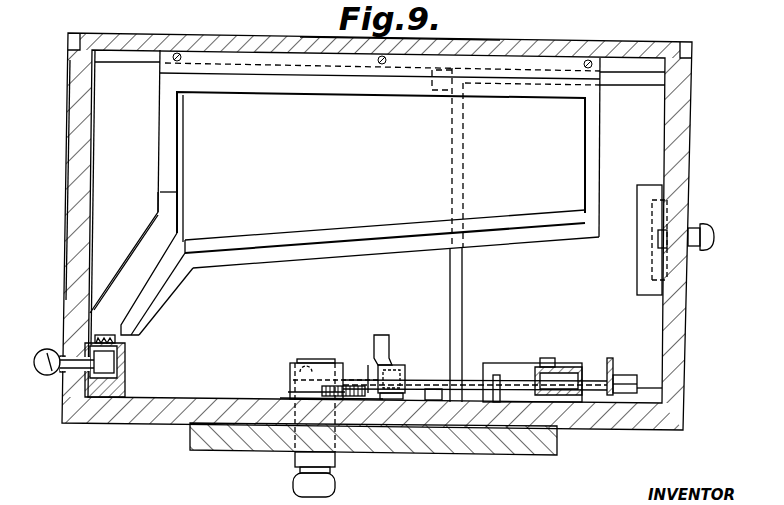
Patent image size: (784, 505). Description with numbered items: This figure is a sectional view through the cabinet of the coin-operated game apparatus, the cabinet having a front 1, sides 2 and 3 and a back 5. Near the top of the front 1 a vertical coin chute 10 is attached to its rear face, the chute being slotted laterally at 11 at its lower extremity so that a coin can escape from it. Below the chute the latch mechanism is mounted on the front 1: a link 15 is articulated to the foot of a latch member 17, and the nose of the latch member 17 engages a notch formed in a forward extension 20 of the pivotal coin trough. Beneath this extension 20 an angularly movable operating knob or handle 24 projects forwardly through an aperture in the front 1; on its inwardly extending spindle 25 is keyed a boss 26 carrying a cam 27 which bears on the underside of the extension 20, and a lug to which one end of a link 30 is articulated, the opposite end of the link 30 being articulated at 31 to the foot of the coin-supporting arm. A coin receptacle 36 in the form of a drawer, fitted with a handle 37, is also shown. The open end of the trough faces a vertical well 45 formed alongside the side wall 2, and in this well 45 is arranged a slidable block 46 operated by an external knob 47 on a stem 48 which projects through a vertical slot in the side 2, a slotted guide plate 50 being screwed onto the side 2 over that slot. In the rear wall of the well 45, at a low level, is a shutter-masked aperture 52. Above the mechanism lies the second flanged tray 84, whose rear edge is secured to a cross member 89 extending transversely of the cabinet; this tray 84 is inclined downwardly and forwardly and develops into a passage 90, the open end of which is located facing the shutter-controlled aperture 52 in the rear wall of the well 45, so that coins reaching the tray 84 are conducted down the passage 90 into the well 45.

The front 1 is at (580, 420).
The side 2 is at (672, 128).
The side 3 is at (64, 175).
The back 5 is at (501, 50).
The coin chute 10 is at (560, 365).
The lateral slot 11 is at (590, 367).
The link 15 is at (432, 379).
The latch member 17 is at (394, 365).
The forward extension 20 is at (382, 337).
The operating knob or handle 24 is at (312, 487).
The spindle 25 is at (316, 359).
The boss 26 is at (290, 366).
The cam 27 is at (353, 396).
The link 30 is at (367, 378).
The articulation 31 is at (632, 374).
The coin receptacle 36 is at (413, 240).
The handle 37 is at (698, 225).
The vertical well 45 is at (125, 374).
The slidable block 46 is at (100, 360).
The external knob 47 is at (47, 376).
The stem 48 is at (77, 370).
The slotted guide plate 50 is at (62, 340).
The aperture 52 is at (90, 322).
The second flanged tray 84 is at (381, 172).
The cross member 89 is at (125, 53).
The passage 90 is at (152, 270).